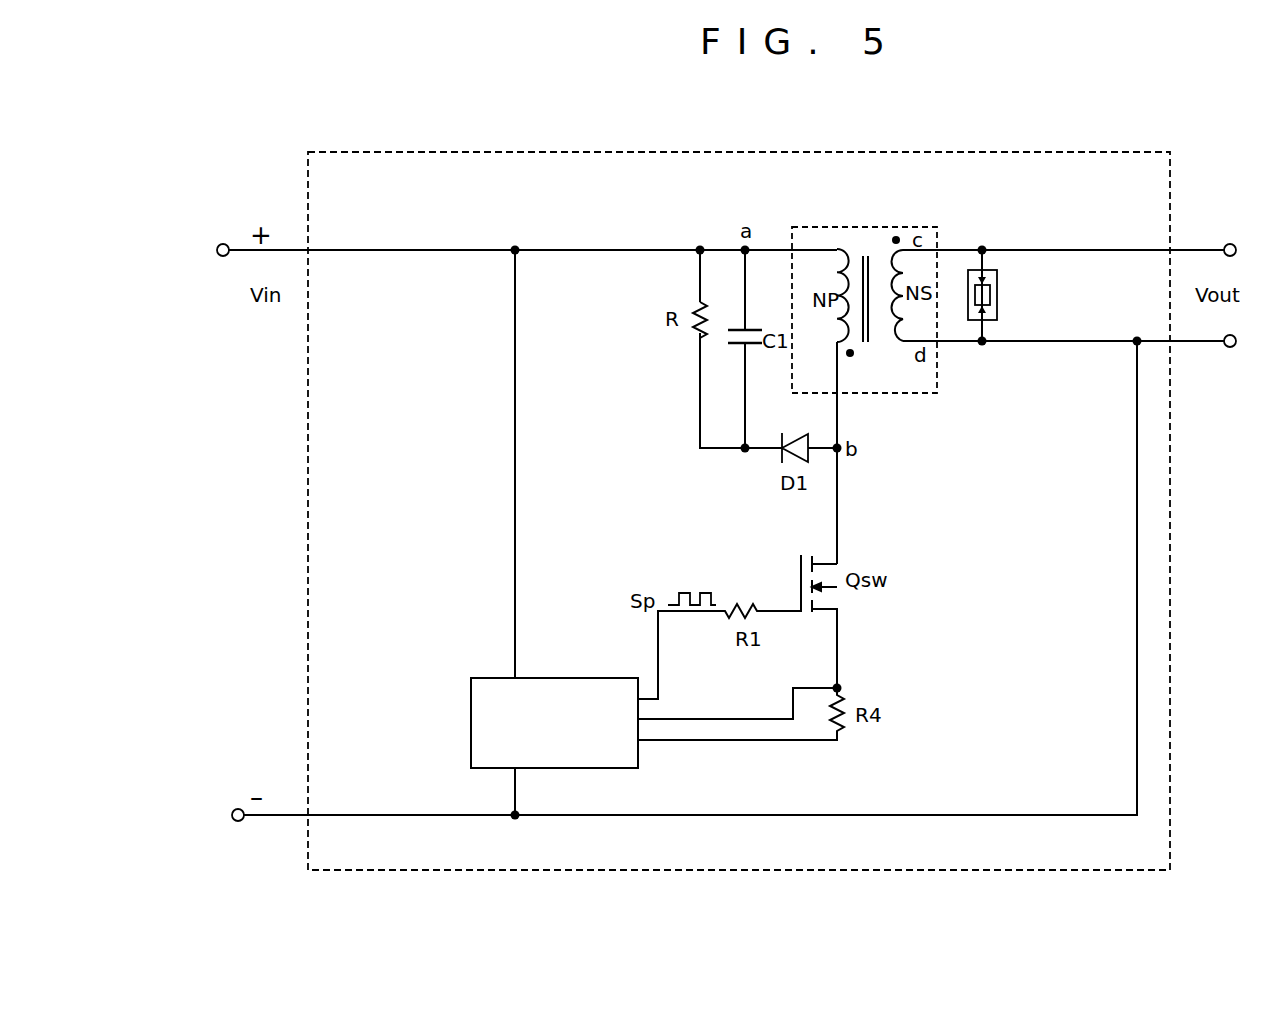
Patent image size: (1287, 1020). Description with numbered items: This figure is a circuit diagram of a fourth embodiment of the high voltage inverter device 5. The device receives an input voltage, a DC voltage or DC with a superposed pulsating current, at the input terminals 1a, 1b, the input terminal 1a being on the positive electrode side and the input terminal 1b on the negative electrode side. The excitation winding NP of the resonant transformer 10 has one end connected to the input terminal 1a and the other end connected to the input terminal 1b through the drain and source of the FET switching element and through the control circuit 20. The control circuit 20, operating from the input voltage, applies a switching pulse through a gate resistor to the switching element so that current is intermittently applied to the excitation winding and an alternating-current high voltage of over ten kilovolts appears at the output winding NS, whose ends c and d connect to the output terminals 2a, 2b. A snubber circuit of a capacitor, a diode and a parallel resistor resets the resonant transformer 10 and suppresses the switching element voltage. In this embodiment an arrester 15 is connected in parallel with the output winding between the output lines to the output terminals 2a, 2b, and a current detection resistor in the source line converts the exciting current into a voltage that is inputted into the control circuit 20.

The input terminal 1a is at (225, 244).
The input terminal 1b is at (240, 822).
The output terminal 2a is at (1232, 244).
The output terminal 2b is at (1231, 348).
The high voltage inverter device 5 is at (1172, 521).
The resonant transformer 10 is at (875, 227).
The arrester 15 is at (997, 297).
The control circuit 20 is at (471, 719).